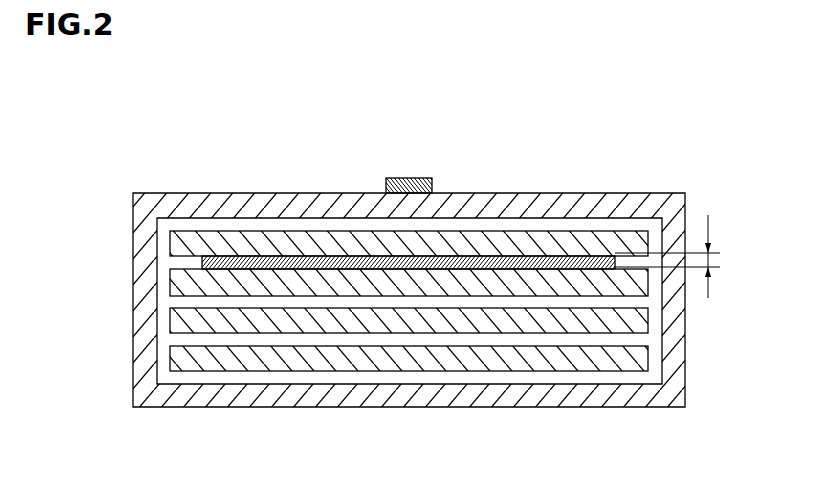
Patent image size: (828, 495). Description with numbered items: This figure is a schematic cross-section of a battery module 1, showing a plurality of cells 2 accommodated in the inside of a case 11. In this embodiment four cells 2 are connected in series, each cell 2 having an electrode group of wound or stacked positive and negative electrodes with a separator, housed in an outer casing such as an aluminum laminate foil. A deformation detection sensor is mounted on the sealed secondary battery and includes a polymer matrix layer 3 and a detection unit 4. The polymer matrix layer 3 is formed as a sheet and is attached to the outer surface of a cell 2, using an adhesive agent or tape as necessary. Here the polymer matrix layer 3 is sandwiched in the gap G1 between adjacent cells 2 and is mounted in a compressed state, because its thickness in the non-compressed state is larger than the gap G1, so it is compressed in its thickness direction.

The battery module 1 is at (410, 295).
The cell 2 is at (190, 372).
The polymer matrix layer 3 is at (270, 257).
The detection unit 4 is at (418, 178).
The case 11 is at (672, 337).
The gap G1 is at (684, 256).